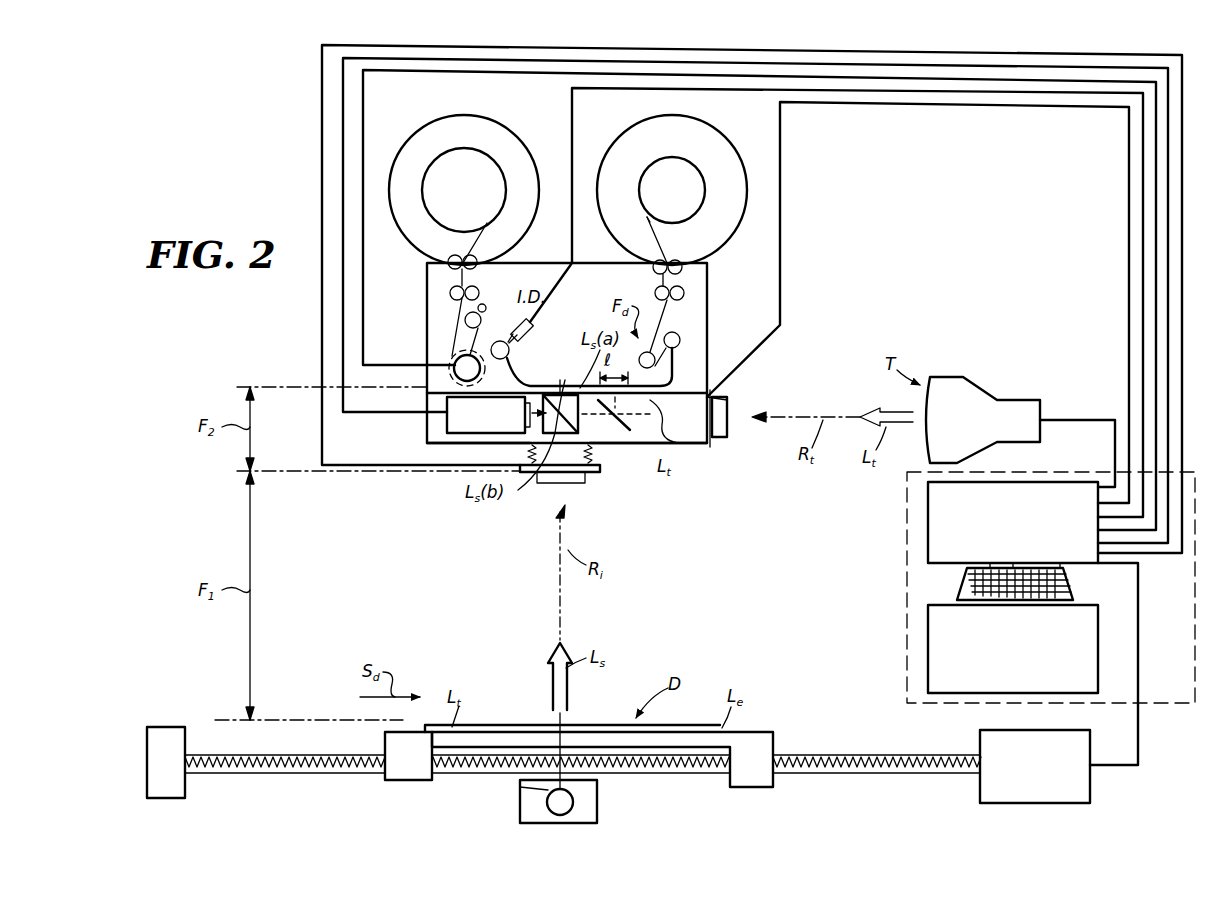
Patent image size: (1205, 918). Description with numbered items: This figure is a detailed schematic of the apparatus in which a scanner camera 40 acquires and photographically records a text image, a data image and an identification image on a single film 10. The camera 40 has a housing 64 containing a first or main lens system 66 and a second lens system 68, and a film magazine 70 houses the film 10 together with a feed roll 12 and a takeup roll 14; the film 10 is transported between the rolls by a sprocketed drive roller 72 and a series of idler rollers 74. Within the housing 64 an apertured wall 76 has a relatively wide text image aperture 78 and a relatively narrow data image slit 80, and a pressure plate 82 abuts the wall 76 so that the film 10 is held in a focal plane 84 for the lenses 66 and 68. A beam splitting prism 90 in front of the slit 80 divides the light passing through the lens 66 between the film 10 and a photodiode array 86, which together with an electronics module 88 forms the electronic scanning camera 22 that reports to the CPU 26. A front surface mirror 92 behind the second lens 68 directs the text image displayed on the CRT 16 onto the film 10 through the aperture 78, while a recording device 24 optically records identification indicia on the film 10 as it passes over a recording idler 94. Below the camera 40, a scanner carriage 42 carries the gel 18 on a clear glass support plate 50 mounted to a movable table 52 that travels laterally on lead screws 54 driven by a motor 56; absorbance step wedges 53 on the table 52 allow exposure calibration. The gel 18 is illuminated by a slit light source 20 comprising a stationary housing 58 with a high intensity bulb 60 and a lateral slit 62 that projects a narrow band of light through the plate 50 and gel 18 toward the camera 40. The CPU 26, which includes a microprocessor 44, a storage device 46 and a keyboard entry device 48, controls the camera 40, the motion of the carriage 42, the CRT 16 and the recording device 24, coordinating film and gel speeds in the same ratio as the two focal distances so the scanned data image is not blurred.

The film 10 is at (646, 222).
The feed roll 12 is at (672, 190).
The takeup roll 14 is at (464, 190).
The CRT 16 is at (983, 420).
The gel 18 is at (692, 724).
The slit light source 20 is at (608, 795).
The electronic scanning camera 22 is at (458, 437).
The recording device 24 is at (531, 330).
The CPU 26 is at (895, 557).
The scanner camera 40 is at (599, 282).
The scanner carriage 42 is at (506, 688).
The microprocessor 44 is at (1013, 522).
The storage device 46 is at (1013, 649).
The keyboard entry device 48 is at (960, 590).
The clear glass support plate 50 is at (758, 733).
The movable table 52 is at (773, 748).
The absorbance step wedges 53 is at (425, 726).
The lead screws 54 is at (882, 758).
The motor 56 is at (1035, 766).
The stationary housing 58 is at (597, 815).
The high intensity bulb 60 is at (520, 800).
The lateral slit 62 is at (520, 787).
The housing 64 is at (707, 306).
The first or main lens system 66 is at (596, 474).
The second lens system 68 is at (727, 400).
The film magazine 70 is at (728, 138).
The sprocketed drive roller 72 is at (455, 355).
The idler rollers 74 is at (478, 293).
The apertured wall 76 is at (700, 390).
The text image aperture 78 is at (665, 420).
The data image aperture or slit 80 is at (565, 394).
The pressure plate 82 is at (554, 394).
The focal plane 84 is at (712, 447).
The photodiode array 86 is at (530, 430).
The electronics module 88 is at (427, 425).
The beam splitting prism 90 is at (594, 462).
The front surface mirror 92 is at (616, 435).
The recording idler 94 is at (500, 360).